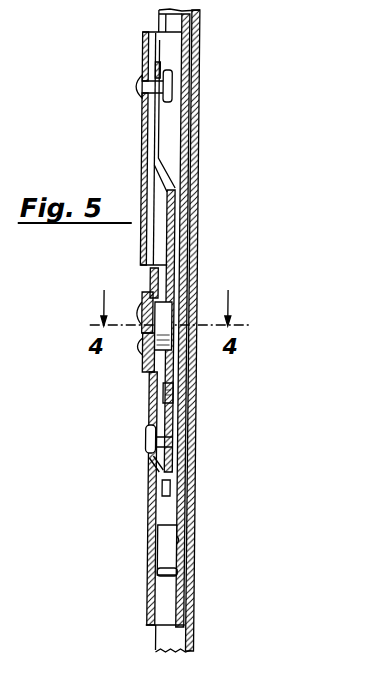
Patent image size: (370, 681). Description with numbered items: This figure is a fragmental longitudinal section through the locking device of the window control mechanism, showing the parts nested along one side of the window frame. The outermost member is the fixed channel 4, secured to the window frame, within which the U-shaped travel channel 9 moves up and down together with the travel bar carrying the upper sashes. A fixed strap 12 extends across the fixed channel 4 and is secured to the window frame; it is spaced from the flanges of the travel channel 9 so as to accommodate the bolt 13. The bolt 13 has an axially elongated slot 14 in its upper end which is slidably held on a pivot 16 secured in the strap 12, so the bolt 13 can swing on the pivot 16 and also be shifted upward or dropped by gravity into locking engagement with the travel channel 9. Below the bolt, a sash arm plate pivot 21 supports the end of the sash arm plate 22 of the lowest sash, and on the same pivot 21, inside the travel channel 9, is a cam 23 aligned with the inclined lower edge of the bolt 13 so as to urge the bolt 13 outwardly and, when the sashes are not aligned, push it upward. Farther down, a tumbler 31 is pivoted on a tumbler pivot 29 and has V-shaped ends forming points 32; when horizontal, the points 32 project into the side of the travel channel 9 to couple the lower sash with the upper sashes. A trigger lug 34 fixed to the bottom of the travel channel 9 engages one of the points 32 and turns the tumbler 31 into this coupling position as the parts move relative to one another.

The fixed channel 4 is at (197, 190).
The travel channel 9 is at (186, 146).
The fixed strap 12 is at (149, 118).
The bolt 13 is at (167, 232).
The elongated slot 14 is at (161, 131).
The pivot 16 is at (161, 89).
The sash arm plate pivot 21 is at (135, 341).
The sash arm plate 22 is at (121, 399).
The cam 23 is at (172, 355).
The tumbler pivot 29 is at (151, 442).
The tumbler 31 is at (165, 478).
The tumbler points 32 is at (170, 500).
The trigger lug 34 is at (168, 548).